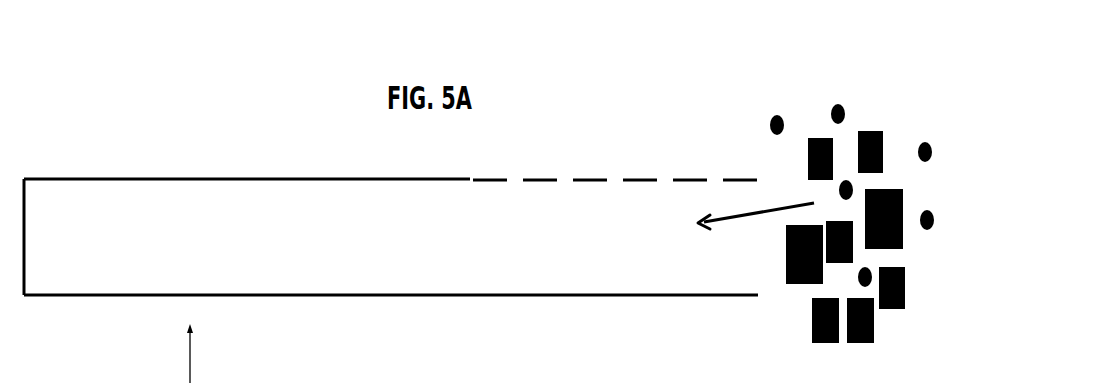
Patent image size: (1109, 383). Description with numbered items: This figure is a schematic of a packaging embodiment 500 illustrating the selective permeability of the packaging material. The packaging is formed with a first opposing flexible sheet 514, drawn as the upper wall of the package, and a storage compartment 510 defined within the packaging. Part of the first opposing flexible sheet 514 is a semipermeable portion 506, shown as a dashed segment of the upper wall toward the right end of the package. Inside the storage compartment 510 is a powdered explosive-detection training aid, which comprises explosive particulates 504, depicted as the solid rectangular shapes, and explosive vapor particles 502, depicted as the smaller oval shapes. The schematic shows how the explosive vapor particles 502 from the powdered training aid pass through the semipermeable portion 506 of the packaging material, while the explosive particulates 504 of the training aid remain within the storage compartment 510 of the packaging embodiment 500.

The packaging embodiment 500 is at (686, 46).
The explosive vapor particles 502 is at (851, 82).
The explosive particulates 504 is at (797, 344).
The semipermeable portion 506 is at (596, 152).
The storage compartment 510 is at (608, 260).
The first opposing flexible sheet 514 is at (161, 150).